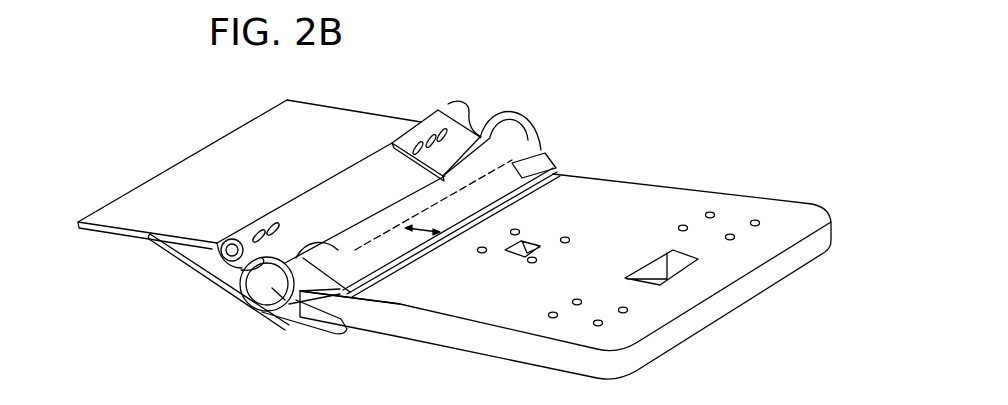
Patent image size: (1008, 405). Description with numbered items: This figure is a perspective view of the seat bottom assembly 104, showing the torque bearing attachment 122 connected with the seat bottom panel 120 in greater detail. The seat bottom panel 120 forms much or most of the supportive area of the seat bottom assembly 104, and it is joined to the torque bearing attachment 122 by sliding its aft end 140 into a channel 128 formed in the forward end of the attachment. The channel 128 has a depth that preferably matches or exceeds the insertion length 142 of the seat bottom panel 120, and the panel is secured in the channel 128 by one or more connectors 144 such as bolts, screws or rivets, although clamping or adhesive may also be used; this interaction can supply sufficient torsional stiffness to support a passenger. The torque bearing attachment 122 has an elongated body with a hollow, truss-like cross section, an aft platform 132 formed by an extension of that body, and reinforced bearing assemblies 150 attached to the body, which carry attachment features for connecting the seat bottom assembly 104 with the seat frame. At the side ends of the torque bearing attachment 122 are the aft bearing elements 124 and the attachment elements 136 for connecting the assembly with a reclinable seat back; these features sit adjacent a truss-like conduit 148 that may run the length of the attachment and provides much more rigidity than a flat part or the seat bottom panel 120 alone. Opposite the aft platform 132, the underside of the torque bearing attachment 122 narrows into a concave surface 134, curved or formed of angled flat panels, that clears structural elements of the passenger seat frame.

The seat bottom assembly 104 is at (679, 137).
The seat bottom panel 120 is at (615, 241).
The torque bearing attachment 122 is at (437, 78).
The aft bearing elements 124 is at (282, 325).
The channel 128 is at (396, 268).
The aft platform 132 is at (208, 158).
The concave surface 134 is at (102, 228).
The attachment elements 136 is at (227, 243).
The aft end 140 is at (427, 213).
The insertion length 142 is at (422, 223).
The connectors 144 is at (537, 163).
The truss-like conduit 148 is at (228, 284).
The reinforced bearing assemblies 150 is at (357, 292).